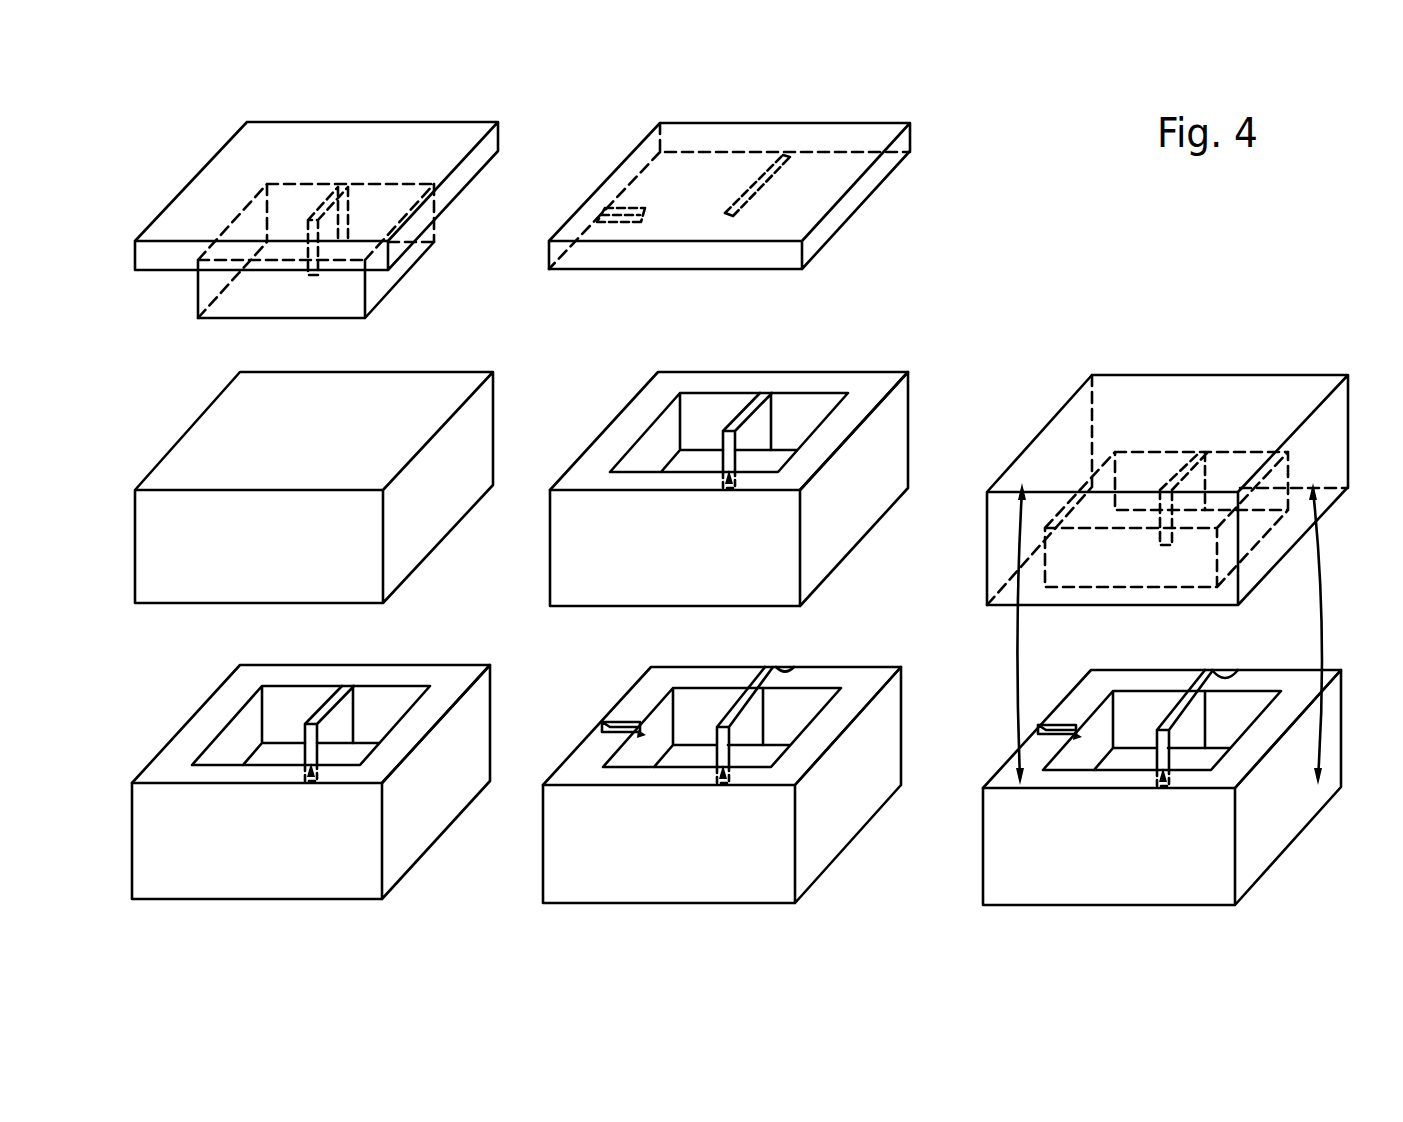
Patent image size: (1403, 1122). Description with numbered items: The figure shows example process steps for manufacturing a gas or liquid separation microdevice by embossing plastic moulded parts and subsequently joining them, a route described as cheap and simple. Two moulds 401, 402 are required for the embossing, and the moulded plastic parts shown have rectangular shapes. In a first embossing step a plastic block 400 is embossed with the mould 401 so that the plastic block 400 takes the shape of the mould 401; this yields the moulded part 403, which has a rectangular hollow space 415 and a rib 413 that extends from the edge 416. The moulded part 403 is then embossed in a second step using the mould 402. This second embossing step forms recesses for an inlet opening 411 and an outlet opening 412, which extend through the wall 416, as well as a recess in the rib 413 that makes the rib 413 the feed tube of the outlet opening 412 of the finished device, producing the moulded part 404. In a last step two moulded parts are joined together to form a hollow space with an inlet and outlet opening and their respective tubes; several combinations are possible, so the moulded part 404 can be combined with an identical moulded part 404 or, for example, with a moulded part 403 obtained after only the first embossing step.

The plastic block 400 is at (395, 372).
The mould 401 is at (373, 121).
The mould 402 is at (793, 121).
The moulded part 403 is at (583, 548).
The moulded part 404 is at (818, 857).
The inlet opening 411 is at (612, 720).
The outlet opening 412 is at (787, 672).
The rib 413 is at (762, 423).
The rectangular hollow space 415 is at (810, 410).
The edge 416 is at (893, 428).